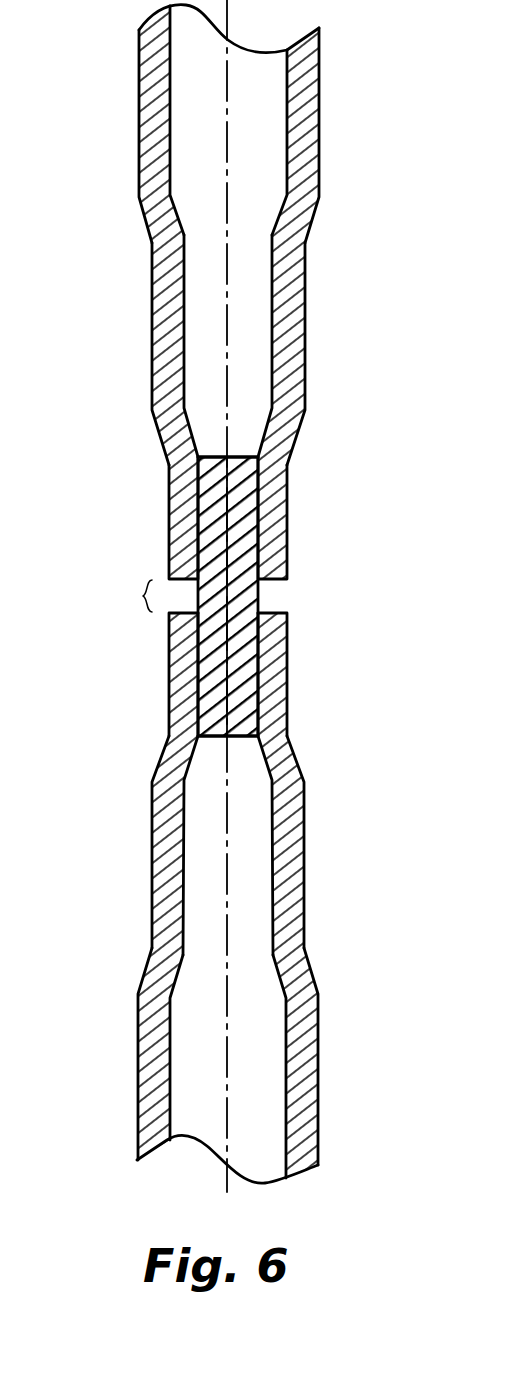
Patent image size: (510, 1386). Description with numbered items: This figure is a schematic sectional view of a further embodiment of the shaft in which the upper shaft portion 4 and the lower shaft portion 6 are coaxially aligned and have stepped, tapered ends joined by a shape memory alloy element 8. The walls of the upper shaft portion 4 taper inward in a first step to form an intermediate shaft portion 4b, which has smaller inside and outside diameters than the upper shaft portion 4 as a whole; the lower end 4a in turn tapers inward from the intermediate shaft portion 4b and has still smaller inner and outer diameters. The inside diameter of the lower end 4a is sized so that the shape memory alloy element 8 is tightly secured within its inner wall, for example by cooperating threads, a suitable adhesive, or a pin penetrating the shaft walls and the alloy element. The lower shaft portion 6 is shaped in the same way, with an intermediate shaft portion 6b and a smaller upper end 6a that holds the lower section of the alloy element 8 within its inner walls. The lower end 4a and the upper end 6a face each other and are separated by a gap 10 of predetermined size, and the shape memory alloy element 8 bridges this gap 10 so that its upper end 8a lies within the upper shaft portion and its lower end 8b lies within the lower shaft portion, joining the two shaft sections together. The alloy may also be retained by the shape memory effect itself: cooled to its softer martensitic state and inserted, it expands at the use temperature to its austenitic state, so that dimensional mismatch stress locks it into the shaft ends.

The upper shaft portion 4 is at (319, 132).
The lower end of the upper shaft portion 4a is at (287, 521).
The intermediate shaft portion of the upper shaft 4b is at (305, 312).
The lower shaft portion 6 is at (318, 1092).
The upper end of the lower shaft portion 6a is at (291, 670).
The intermediate shaft portion of the lower shaft 6b is at (306, 858).
The shape memory alloy element 8 is at (237, 597).
The upper end of the shape memory alloy element 8a is at (263, 470).
The lower end of the shape memory alloy element 8b is at (260, 737).
The gap 10 is at (138, 596).